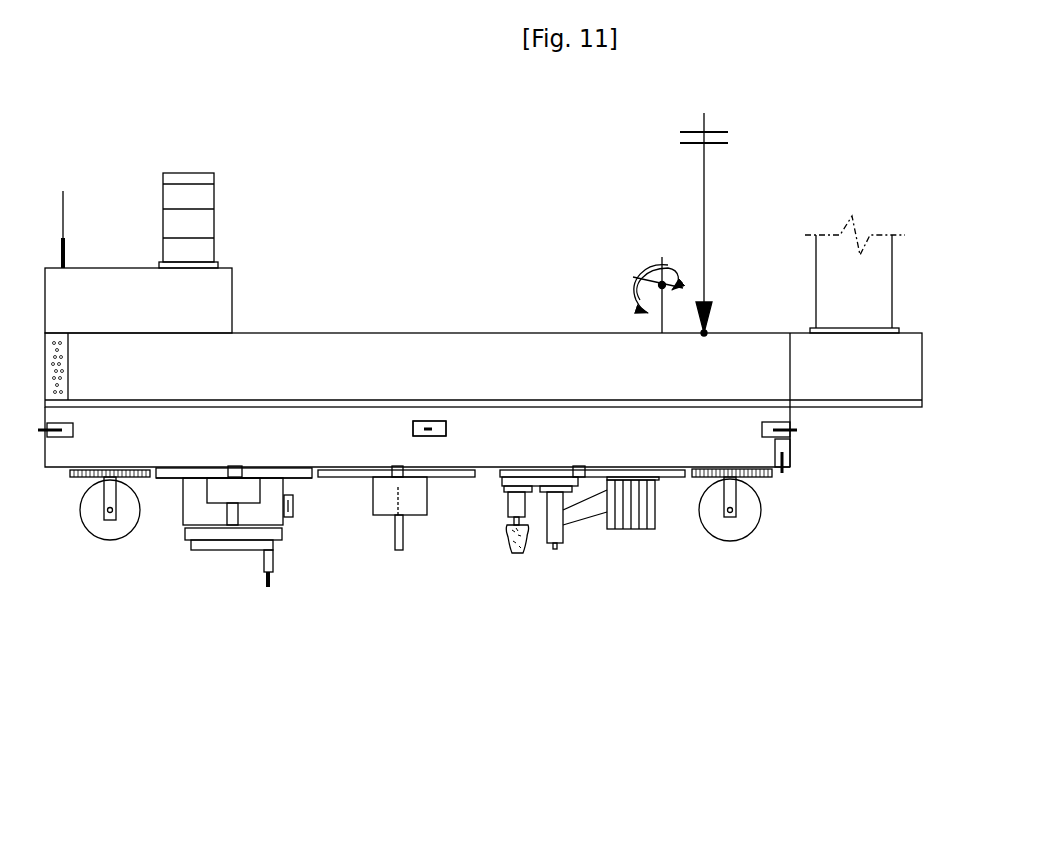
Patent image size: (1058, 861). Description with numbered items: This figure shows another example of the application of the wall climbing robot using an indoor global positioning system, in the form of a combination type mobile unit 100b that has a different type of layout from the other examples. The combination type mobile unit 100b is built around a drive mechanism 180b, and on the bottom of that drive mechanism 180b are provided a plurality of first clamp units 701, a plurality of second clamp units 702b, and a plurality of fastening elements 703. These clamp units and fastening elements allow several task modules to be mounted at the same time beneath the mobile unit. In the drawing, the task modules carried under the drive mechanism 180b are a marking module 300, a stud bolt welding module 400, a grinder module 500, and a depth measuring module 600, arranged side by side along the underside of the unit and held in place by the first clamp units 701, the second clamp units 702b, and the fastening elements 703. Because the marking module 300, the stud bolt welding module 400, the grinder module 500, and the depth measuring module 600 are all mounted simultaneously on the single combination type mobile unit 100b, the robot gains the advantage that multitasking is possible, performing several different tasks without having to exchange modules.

The combination type mobile unit 100b is at (747, 193).
The drive mechanism 180b is at (357, 432).
The second clamp unit 702b is at (158, 468).
The first clamp unit 701 is at (168, 478).
The fastening element 703 is at (238, 478).
The marking module 300 is at (218, 560).
The depth measuring module 600 is at (395, 560).
The grinder module 500 is at (508, 560).
The stud bolt welding module 400 is at (558, 560).